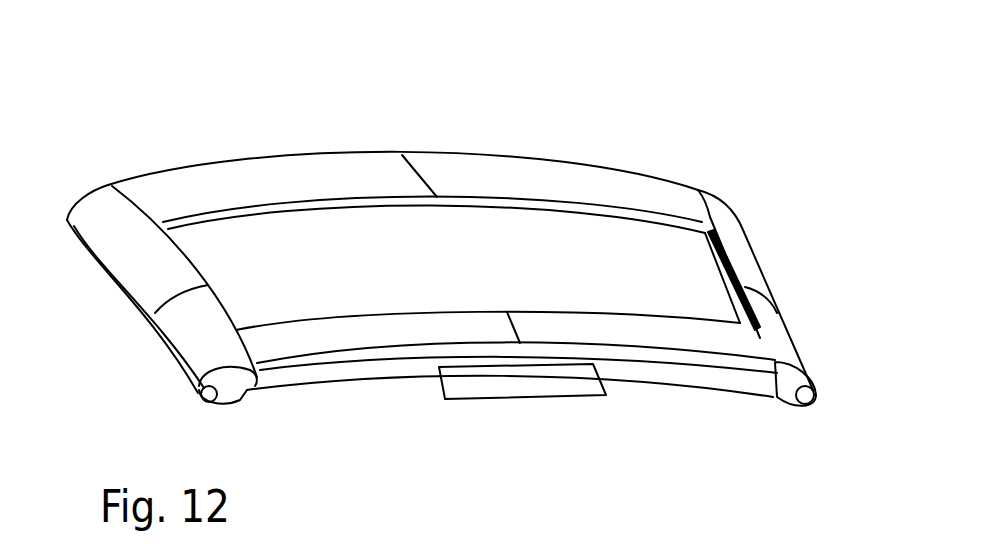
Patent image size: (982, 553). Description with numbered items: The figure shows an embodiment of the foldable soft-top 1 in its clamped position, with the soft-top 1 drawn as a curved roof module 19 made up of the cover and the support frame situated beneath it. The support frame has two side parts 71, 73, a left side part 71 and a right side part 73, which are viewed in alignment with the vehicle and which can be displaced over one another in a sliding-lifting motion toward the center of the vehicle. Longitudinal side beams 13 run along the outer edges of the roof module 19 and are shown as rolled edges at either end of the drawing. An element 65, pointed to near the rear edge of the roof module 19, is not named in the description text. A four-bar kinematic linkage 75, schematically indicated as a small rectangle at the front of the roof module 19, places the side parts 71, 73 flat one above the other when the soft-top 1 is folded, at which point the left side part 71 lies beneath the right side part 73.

The soft-top 1 is at (518, 58).
The roof module 19 is at (291, 103).
The cover element 65 is at (640, 152).
The left side part 71 is at (152, 278).
The right side part 73 is at (745, 260).
The longitudinal side beams 13 is at (192, 346).
The four-bar kinematic linkage 75 is at (537, 398).